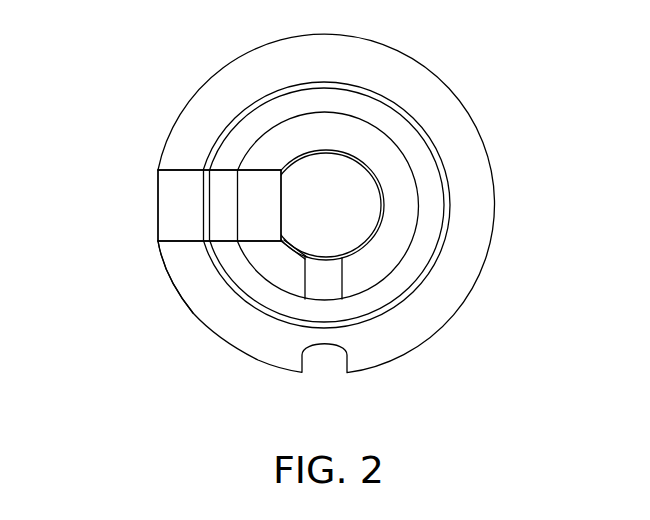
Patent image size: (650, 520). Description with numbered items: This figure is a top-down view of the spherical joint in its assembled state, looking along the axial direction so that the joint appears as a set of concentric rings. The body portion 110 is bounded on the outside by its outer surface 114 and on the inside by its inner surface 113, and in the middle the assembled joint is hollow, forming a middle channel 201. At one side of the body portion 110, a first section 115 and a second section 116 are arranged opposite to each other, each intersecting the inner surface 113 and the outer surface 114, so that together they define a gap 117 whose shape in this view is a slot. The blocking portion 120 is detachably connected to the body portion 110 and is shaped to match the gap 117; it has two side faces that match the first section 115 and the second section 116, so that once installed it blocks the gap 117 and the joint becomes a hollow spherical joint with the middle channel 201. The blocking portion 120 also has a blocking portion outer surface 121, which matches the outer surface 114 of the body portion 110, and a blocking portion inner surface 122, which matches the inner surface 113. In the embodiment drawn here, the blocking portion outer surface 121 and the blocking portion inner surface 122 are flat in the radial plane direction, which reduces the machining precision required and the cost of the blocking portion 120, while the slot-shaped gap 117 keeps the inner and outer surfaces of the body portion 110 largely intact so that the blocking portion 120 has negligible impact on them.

The body portion 110 is at (450, 128).
The inner surface 113 is at (372, 170).
The outer surface 114 is at (197, 90).
The first section 115 is at (182, 246).
The second section 116 is at (182, 163).
The gap 117 is at (141, 186).
The blocking portion 120 is at (182, 217).
The blocking portion outer surface 121 is at (157, 202).
The blocking portion inner surface 122 is at (285, 196).
The middle channel 201 is at (337, 227).